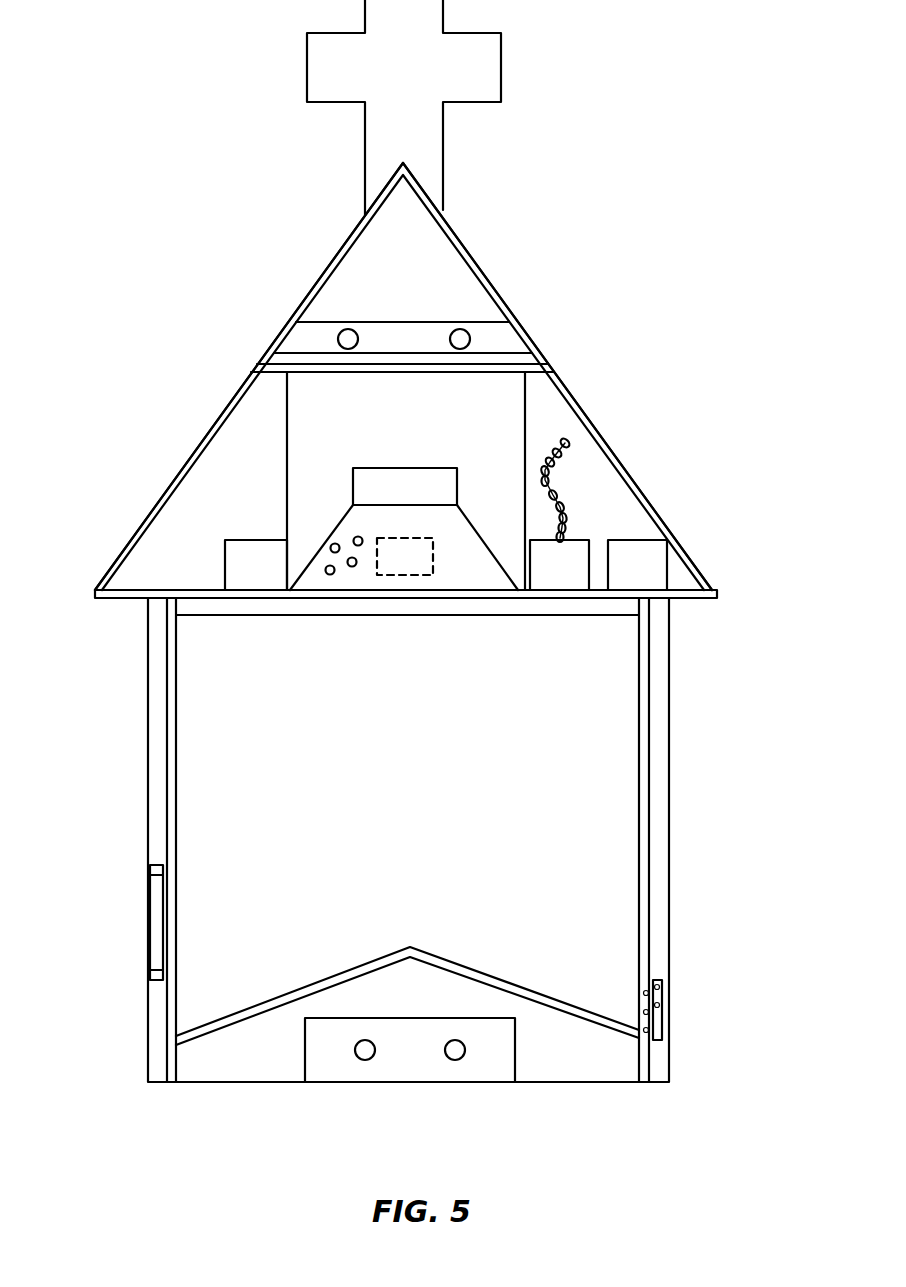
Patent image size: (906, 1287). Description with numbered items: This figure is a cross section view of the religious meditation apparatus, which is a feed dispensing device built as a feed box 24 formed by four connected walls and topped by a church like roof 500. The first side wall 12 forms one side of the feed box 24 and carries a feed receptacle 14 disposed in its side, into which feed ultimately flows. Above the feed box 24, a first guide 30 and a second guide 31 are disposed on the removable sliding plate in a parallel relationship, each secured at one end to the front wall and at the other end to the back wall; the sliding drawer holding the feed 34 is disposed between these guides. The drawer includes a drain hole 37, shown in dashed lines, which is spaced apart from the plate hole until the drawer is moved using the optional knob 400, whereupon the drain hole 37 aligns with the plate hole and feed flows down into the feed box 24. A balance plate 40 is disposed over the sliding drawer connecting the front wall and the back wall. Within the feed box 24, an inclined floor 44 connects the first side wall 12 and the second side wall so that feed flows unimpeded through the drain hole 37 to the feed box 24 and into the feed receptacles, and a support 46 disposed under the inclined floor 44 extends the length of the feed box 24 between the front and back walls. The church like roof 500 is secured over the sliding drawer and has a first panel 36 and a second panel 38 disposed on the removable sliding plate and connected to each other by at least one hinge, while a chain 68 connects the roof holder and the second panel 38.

The church like roof 500 is at (531, 310).
The first side wall 12 is at (148, 790).
The feed receptacle 14 is at (148, 925).
The feed box 24 is at (585, 753).
The first guide 30 is at (246, 570).
The second guide 31 is at (657, 552).
The feed 34 is at (322, 548).
The first panel 36 is at (243, 386).
The drain hole 37 is at (440, 552).
The second panel 38 is at (566, 388).
The balance plate 40 is at (518, 363).
The inclined floor 44 is at (500, 980).
The support 46 is at (465, 1052).
The chain 68 is at (568, 442).
The knob 400 is at (405, 485).